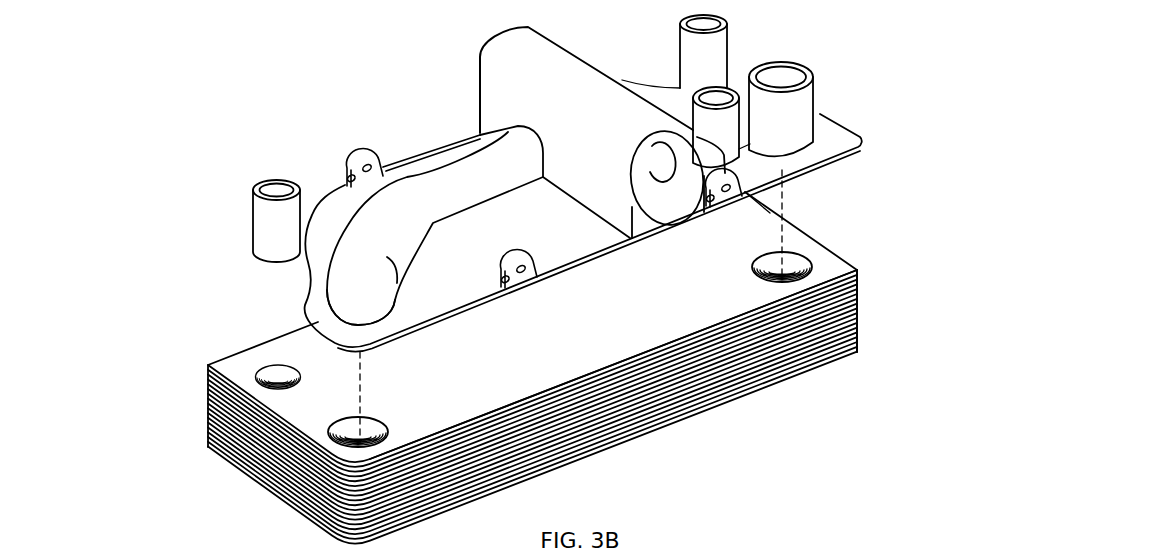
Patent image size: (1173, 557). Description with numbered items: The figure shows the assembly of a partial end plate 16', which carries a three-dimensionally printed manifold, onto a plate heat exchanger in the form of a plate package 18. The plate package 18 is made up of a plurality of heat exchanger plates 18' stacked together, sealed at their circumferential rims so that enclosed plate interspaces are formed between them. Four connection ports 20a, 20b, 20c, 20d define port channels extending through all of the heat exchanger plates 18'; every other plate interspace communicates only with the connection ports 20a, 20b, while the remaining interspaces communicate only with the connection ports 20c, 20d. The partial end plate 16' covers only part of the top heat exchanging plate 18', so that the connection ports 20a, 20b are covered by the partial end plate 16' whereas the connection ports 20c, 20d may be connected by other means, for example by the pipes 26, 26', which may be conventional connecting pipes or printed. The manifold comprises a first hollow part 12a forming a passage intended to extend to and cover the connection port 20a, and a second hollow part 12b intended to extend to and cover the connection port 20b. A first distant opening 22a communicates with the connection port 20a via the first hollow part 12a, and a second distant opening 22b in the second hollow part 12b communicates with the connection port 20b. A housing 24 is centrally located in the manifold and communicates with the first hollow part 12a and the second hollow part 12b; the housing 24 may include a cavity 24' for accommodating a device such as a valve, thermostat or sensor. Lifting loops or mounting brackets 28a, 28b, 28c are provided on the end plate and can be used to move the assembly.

The plate package 18 is at (466, 280).
The heat exchanger plates 18' is at (675, 237).
The connection port 20a is at (350, 433).
The connection port 20b is at (797, 273).
The connection port 20c is at (275, 378).
The connection port 20d is at (713, 208).
The pipe 26 is at (246, 159).
The pipe 26' is at (683, 51).
The first hollow part 12a is at (330, 280).
The second hollow part 12b is at (653, 98).
The partial end plate 16' is at (340, 190).
The lifting loop/mounting bracket 28a is at (505, 262).
The lifting loop/mounting bracket 28b is at (740, 188).
The lifting loop/mounting bracket 28c is at (367, 143).
The housing 24 is at (585, 147).
The cavity 24' is at (548, 74).
The first distant opening 22a is at (713, 97).
The second distant opening 22b is at (777, 80).